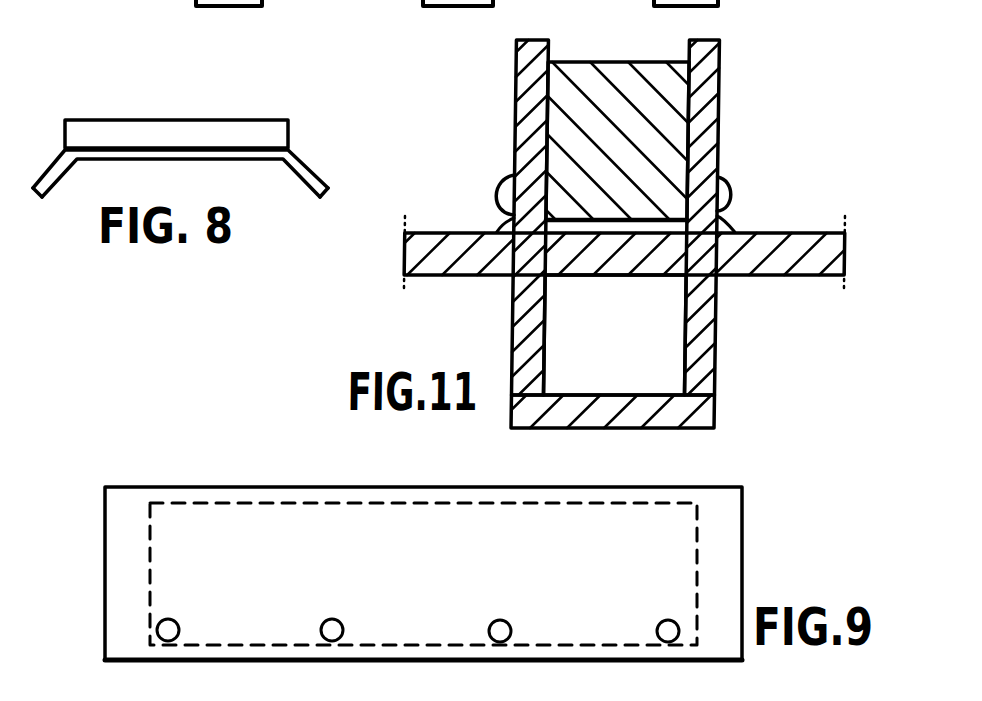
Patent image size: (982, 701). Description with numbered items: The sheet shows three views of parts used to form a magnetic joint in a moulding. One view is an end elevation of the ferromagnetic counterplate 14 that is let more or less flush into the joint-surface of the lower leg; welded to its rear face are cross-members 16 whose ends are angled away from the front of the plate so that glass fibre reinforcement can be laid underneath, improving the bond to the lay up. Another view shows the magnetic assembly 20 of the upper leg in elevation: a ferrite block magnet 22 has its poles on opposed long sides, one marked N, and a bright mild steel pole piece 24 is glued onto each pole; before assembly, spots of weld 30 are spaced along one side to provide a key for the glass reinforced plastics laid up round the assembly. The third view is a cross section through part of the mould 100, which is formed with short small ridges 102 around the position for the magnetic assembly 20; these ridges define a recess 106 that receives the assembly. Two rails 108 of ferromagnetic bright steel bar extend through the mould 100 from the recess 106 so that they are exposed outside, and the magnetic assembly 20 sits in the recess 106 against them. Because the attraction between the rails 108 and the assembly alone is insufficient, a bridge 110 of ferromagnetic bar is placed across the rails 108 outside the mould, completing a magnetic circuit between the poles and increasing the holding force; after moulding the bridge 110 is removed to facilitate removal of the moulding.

In FIG. 8, the ferromagnetic counterplate 14 is at (155, 128).
In FIG. 8, the cross-members 16 is at (310, 167).
In FIG. 11, the magnetic assembly 20 is at (594, 230).
In FIG. 9, the magnetic assembly 20 is at (217, 486).
In FIG. 9, the ferrite block magnet 22 is at (330, 501).
In FIG. 9, the pole piece 24 is at (413, 487).
In FIG. 11, the spots of weld 30 is at (498, 185).
In FIG. 9, the spots of weld 30 is at (170, 628).
In FIG. 11, the mould 100 is at (797, 258).
In FIG. 11, the ridges 102 is at (503, 228).
In FIG. 11, the recess 106 is at (587, 228).
In FIG. 11, the rails 108 is at (532, 316).
In FIG. 11, the bridge 110 is at (647, 413).